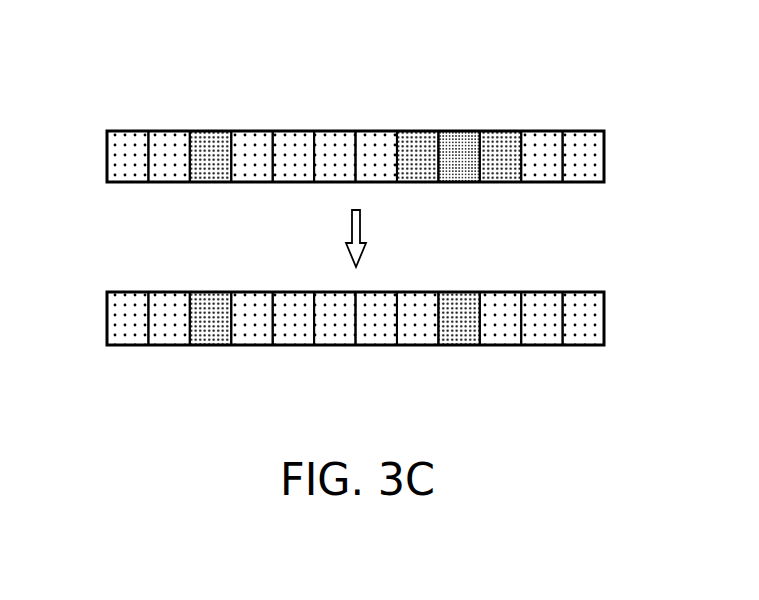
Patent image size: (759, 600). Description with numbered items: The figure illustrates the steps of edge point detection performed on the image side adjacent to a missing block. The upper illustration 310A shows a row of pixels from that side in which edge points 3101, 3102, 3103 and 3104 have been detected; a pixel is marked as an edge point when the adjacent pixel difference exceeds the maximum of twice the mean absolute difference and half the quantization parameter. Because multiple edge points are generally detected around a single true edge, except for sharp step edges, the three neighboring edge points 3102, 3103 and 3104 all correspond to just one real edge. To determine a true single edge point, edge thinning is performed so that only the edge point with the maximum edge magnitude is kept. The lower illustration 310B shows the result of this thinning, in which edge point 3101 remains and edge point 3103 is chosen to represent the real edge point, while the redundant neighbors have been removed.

The illustration 310A is at (416, 115).
The illustration 310B is at (604, 318).
The edge point 3101 is at (210, 131).
The edge point 3102 is at (418, 131).
The edge point 3103 is at (455, 131).
The edge point 3104 is at (502, 131).